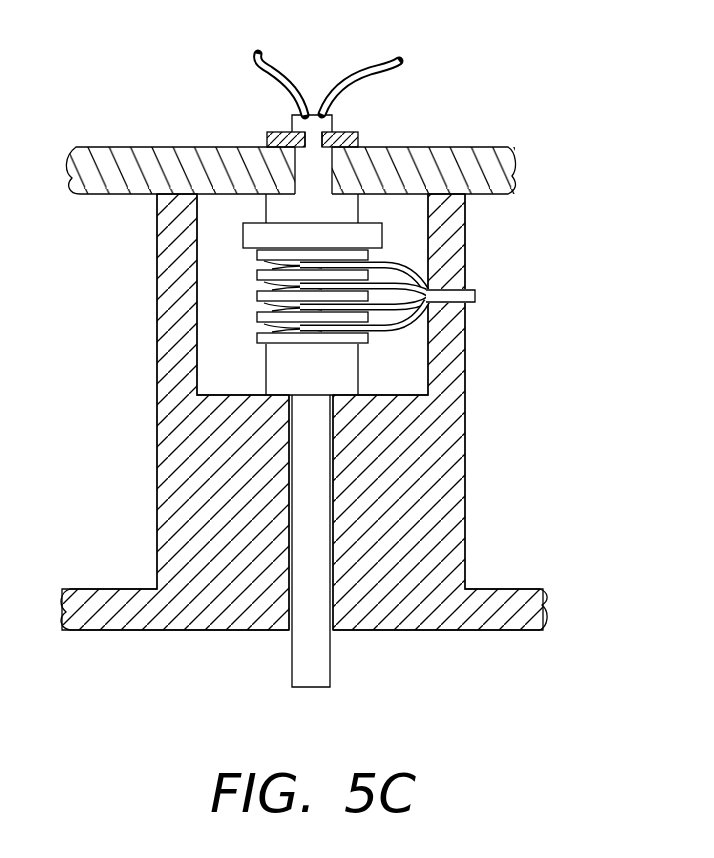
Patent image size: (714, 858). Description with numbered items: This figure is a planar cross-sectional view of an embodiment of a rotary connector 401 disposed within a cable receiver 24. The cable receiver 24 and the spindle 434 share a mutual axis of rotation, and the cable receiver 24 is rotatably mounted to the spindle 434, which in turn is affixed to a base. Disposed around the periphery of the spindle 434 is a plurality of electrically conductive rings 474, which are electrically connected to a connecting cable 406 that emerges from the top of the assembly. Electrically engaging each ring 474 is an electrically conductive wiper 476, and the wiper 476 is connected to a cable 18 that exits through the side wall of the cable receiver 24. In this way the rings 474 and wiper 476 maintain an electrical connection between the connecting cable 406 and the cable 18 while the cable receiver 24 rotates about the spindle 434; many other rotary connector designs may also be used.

The cable receiver 24 is at (450, 147).
The rotary connector 401 is at (250, 222).
The connecting cable 406 is at (283, 62).
The electrically conductive rings 474 is at (258, 314).
The electrically conductive wiper 476 is at (400, 260).
The cable 18 is at (477, 303).
The spindle 434 is at (333, 660).